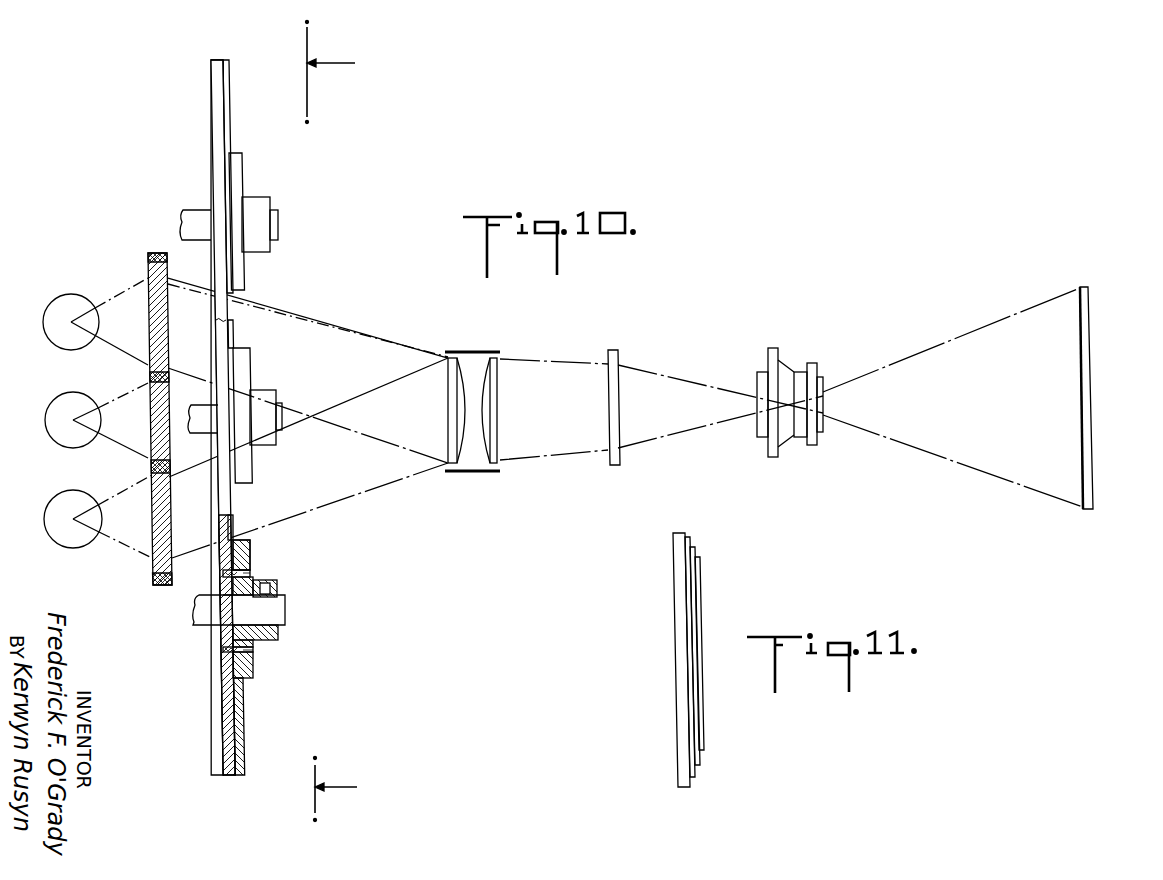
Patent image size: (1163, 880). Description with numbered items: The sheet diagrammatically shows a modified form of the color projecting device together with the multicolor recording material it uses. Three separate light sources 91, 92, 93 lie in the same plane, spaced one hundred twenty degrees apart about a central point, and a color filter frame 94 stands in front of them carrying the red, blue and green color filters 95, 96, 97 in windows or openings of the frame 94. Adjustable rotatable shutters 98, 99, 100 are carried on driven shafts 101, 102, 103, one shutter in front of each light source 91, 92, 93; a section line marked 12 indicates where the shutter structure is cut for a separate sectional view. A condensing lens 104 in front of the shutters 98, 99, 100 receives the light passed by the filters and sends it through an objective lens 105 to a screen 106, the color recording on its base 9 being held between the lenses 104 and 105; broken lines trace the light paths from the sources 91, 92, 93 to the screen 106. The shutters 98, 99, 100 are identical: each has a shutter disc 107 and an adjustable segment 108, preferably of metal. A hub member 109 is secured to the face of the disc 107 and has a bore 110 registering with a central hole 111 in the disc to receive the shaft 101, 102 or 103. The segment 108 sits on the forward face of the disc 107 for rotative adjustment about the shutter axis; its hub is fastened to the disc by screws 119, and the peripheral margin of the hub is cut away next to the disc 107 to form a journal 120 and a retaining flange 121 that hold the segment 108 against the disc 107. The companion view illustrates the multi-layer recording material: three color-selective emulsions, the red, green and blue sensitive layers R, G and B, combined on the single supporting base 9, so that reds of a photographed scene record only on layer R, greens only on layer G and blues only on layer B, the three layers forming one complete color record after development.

In FIG. 10, the supporting base 9 is at (612, 430).
In FIG. 11, the supporting base 9 is at (675, 600).
In FIG. 10, the section line FIG. 12 is at (332, 421).
In FIG. 10, the light source 91 is at (59, 542).
In FIG. 10, the light source 92 is at (53, 441).
In FIG. 10, the light source 93 is at (52, 342).
In FIG. 10, the color filter frame 94 is at (160, 586).
In FIG. 10, the red color filter 95 is at (152, 537).
In FIG. 10, the blue color filter 96 is at (171, 390).
In FIG. 10, the green color filter 97 is at (168, 327).
In FIG. 10, the rotatable shutter 98 is at (225, 706).
In FIG. 10, the rotatable shutter 99 is at (255, 332).
In FIG. 10, the rotatable shutter 100 is at (223, 122).
In FIG. 10, the driven shaft 101 is at (286, 603).
In FIG. 10, the driven shaft 102 is at (283, 414).
In FIG. 10, the driven shaft 103 is at (279, 222).
In FIG. 10, the condensing lens 104 is at (473, 362).
In FIG. 10, the objective lens 105 is at (790, 365).
In FIG. 10, the screen 106 is at (1091, 307).
In FIG. 10, the shutter disc 107 is at (217, 148).
In FIG. 10, the adjustable segment 108 is at (231, 140).
In FIG. 10, the hub member 109 is at (256, 580).
In FIG. 10, the bore 110 is at (263, 583).
In FIG. 10, the central hole 111 is at (222, 596).
In FIG. 10, the screws 119 is at (222, 572).
In FIG. 10, the journal 120 is at (250, 560).
In FIG. 10, the retaining flange 121 is at (246, 540).
In FIG. 11, the red color-sensitive emulsion layer R is at (690, 540).
In FIG. 11, the green color-sensitive emulsion layer G is at (695, 552).
In FIG. 11, the blue color-sensitive emulsion layer B is at (700, 575).